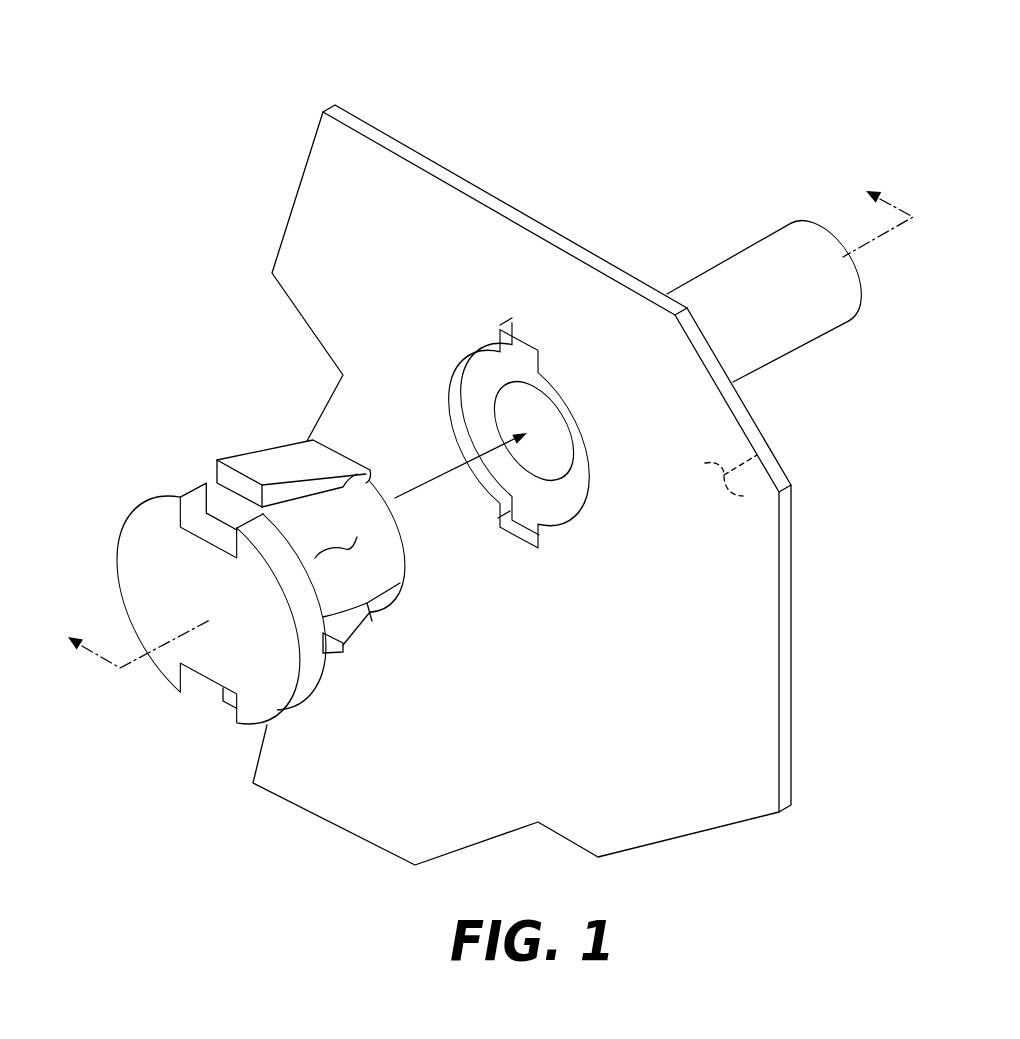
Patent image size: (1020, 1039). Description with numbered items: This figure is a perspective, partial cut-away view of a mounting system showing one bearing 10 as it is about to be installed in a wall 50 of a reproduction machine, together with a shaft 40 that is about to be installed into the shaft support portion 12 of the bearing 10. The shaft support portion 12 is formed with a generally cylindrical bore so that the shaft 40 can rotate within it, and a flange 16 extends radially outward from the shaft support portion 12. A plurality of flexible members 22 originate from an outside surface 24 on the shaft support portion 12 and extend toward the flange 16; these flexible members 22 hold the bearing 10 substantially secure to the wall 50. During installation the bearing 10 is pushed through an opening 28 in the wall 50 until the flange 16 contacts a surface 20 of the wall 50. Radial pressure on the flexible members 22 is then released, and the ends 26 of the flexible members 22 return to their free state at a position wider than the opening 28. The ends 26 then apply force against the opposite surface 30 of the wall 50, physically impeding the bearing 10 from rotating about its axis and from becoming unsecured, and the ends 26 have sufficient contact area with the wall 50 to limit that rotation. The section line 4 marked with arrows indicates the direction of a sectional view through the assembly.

The section line 4- 4 is at (478, 418).
The bearing 10 is at (104, 498).
The shaft support portion 12 is at (367, 607).
The flange 16 is at (183, 487).
The surface 20 is at (753, 777).
The flexible members 22 is at (270, 450).
The outside surface 24 is at (345, 552).
The ends 26 is at (225, 478).
The opening 28 is at (577, 503).
The surface 30 is at (757, 453).
The shaft 40 is at (797, 243).
The wall 50 is at (323, 108).